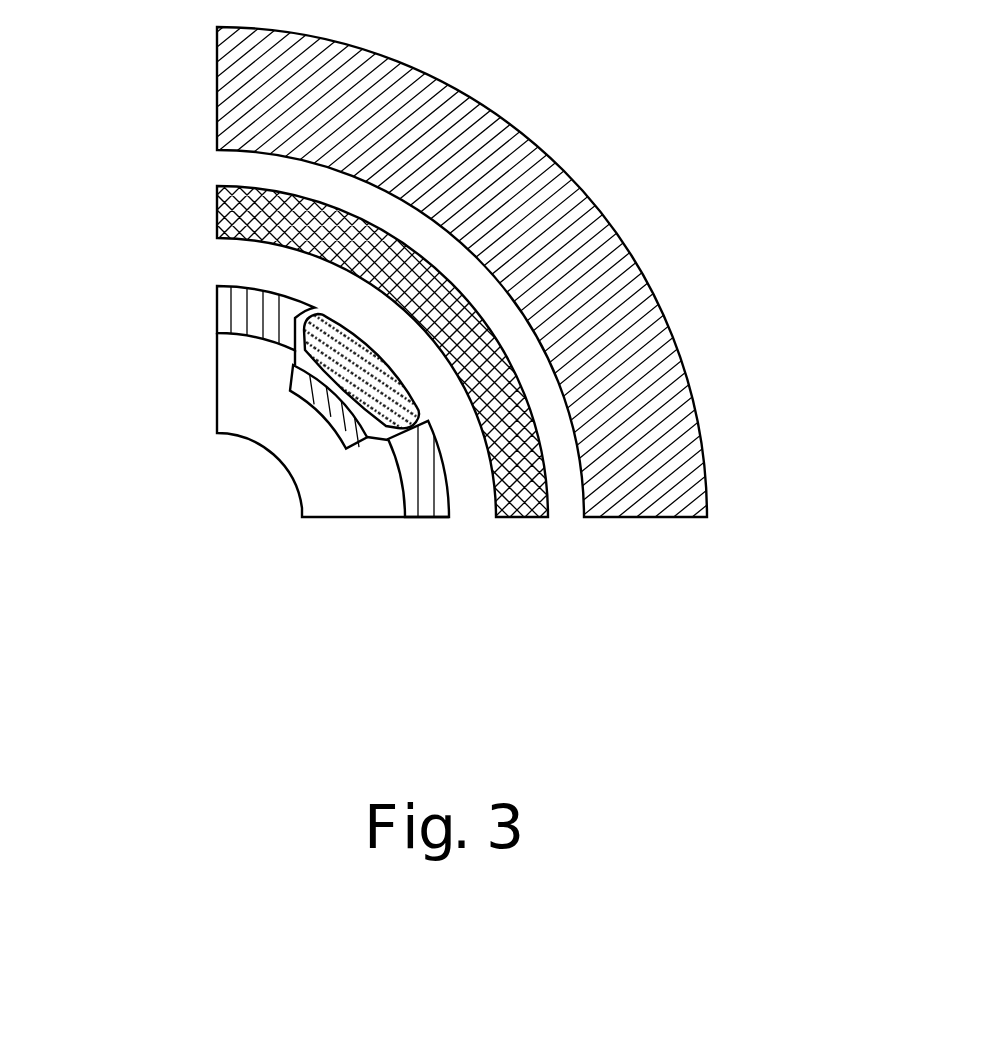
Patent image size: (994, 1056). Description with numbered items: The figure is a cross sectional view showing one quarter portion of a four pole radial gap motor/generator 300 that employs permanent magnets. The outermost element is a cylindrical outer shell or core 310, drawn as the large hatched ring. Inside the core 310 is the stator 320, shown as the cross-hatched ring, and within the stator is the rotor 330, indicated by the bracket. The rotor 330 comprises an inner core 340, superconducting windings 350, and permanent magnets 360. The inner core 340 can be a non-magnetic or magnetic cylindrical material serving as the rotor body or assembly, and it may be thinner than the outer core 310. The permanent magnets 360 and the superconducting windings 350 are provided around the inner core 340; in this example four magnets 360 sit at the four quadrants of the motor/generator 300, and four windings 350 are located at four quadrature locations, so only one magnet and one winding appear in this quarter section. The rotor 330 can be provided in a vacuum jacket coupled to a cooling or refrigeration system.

The motor/generator 300 is at (443, 458).
The outer core 310 is at (680, 420).
The stator 320 is at (230, 210).
The rotor 330 is at (327, 468).
The inner core 340 is at (363, 503).
The superconducting windings 350 is at (392, 413).
The permanent magnets 360 is at (407, 468).